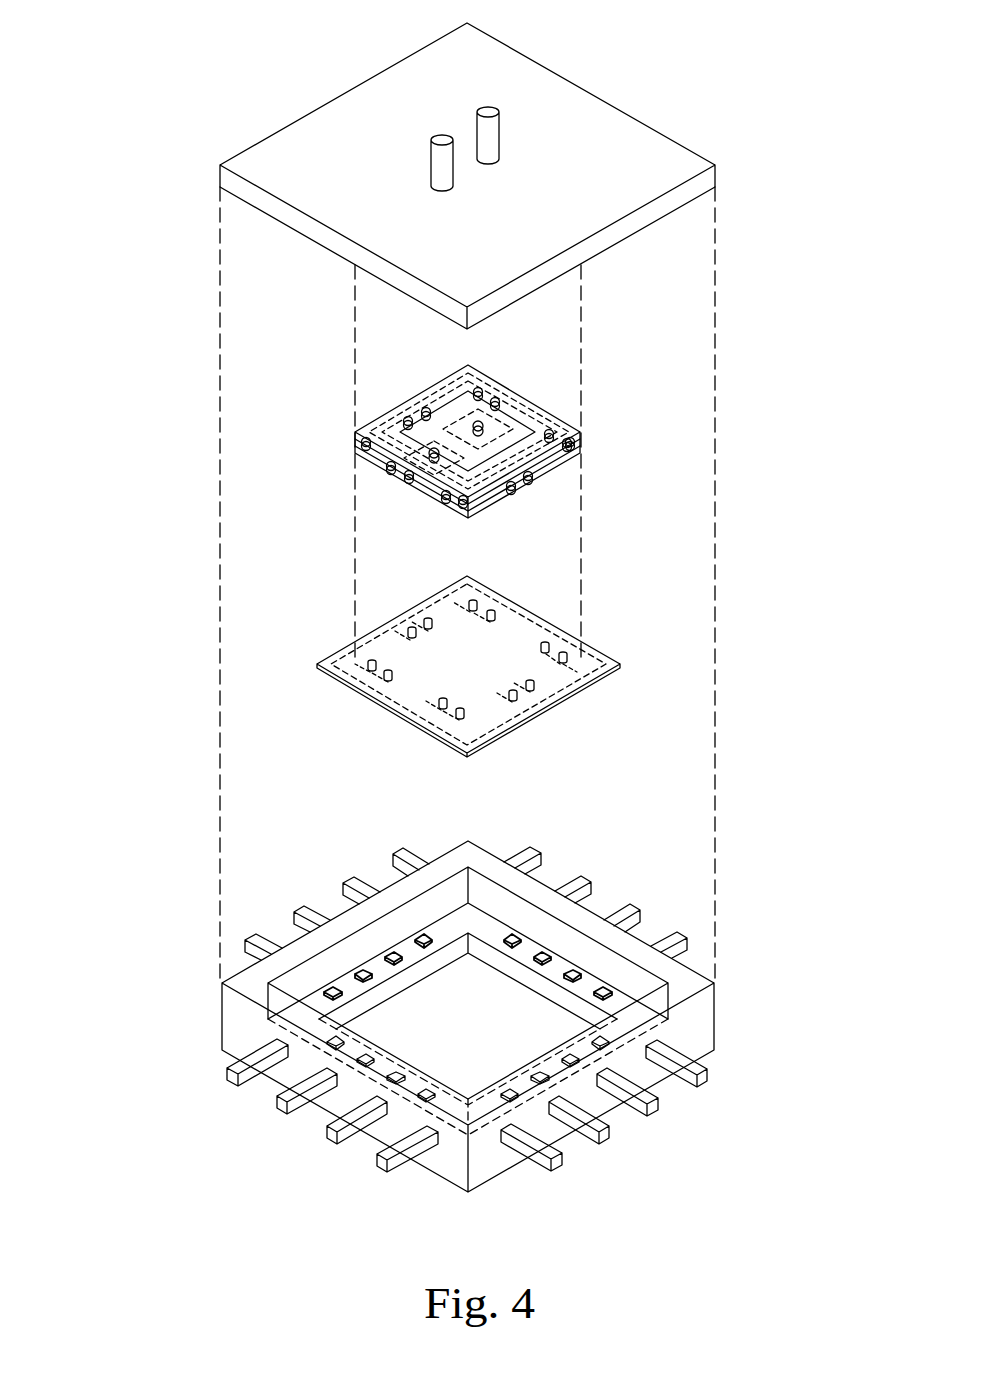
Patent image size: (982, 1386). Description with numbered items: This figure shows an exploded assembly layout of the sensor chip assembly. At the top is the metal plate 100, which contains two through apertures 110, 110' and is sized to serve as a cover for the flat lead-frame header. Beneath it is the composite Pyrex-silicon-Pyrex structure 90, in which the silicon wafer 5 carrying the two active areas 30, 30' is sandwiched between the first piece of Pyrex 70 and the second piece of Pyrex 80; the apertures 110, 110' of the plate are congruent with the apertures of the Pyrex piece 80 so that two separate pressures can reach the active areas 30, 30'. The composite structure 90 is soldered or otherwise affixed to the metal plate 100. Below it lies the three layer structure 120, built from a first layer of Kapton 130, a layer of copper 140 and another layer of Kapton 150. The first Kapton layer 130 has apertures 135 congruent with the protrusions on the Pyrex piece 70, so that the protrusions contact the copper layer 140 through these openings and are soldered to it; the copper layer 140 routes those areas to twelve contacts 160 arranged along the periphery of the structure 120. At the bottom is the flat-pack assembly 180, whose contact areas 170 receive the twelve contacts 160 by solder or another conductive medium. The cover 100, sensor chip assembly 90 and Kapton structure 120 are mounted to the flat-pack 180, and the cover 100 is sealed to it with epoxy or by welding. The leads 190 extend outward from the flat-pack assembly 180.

The metal plate 100 is at (220, 165).
The through aperture 110 is at (364, 118).
The through aperture 110' is at (567, 93).
The composite Pyrex-silicon-Pyrex structure 90 is at (510, 433).
The second piece of Pyrex 80 is at (355, 432).
The silicon wafer 5 is at (355, 441).
The first piece of Pyrex 70 is at (355, 450).
The active area 30' is at (504, 383).
The active area 30 is at (473, 494).
The three layer structure 120 is at (524, 674).
The apertures 135 is at (376, 668).
The contacts 160 is at (365, 692).
The layer of copper 140 is at (403, 714).
The layer of Kapton 150 is at (495, 745).
The first layer of Kapton 130 is at (560, 690).
The flat-pack assembly 180 is at (528, 1015).
The contact areas 170 is at (513, 940).
The external lead 190 is at (640, 910).